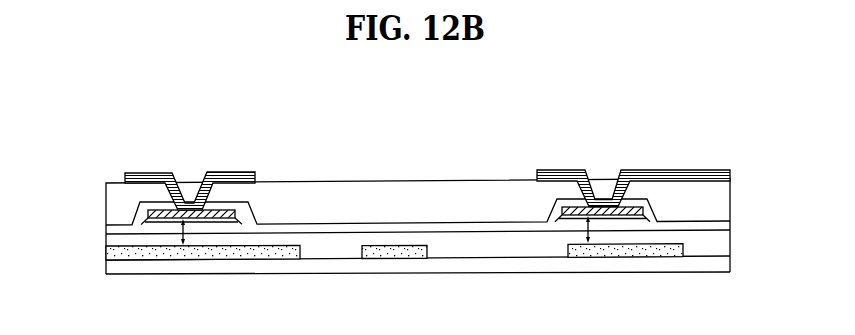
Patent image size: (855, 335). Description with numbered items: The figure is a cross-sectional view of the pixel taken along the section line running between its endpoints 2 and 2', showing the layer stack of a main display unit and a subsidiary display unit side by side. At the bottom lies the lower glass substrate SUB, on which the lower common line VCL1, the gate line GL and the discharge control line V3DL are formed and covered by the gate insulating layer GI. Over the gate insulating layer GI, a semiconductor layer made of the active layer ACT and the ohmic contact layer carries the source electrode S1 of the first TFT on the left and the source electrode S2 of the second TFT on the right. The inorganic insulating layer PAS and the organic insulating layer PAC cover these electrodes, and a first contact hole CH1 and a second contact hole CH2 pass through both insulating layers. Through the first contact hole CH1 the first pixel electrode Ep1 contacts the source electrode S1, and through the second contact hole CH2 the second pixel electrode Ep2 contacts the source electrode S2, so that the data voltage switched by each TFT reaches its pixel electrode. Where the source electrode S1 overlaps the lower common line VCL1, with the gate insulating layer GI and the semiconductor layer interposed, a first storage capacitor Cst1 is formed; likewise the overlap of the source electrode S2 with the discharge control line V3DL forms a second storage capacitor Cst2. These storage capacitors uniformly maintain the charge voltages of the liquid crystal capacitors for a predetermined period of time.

The organic insulating layer PAC is at (110, 198).
The inorganic insulating layer PAS is at (110, 228).
The gate insulating layer GI is at (107, 234).
The lower glass substrate SUB is at (107, 266).
The lower common line VCL1 is at (289, 254).
The gate line GL is at (390, 253).
The discharge control line V3DL is at (637, 252).
The active layer ACT is at (236, 226).
The source electrode of the first TFT S1 is at (157, 219).
The source electrode of the second TFT S2 is at (578, 216).
The first pixel electrode Ep1 is at (255, 174).
The second pixel electrode Ep2 is at (730, 173).
The first contact hole CH1 is at (190, 178).
The second contact hole CH2 is at (604, 174).
The first storage capacitor Cst1 is at (207, 234).
The second storage capacitor Cst2 is at (612, 229).
The section line 2-2' 2 is at (105, 293).
The section line 2- 2' is at (733, 286).